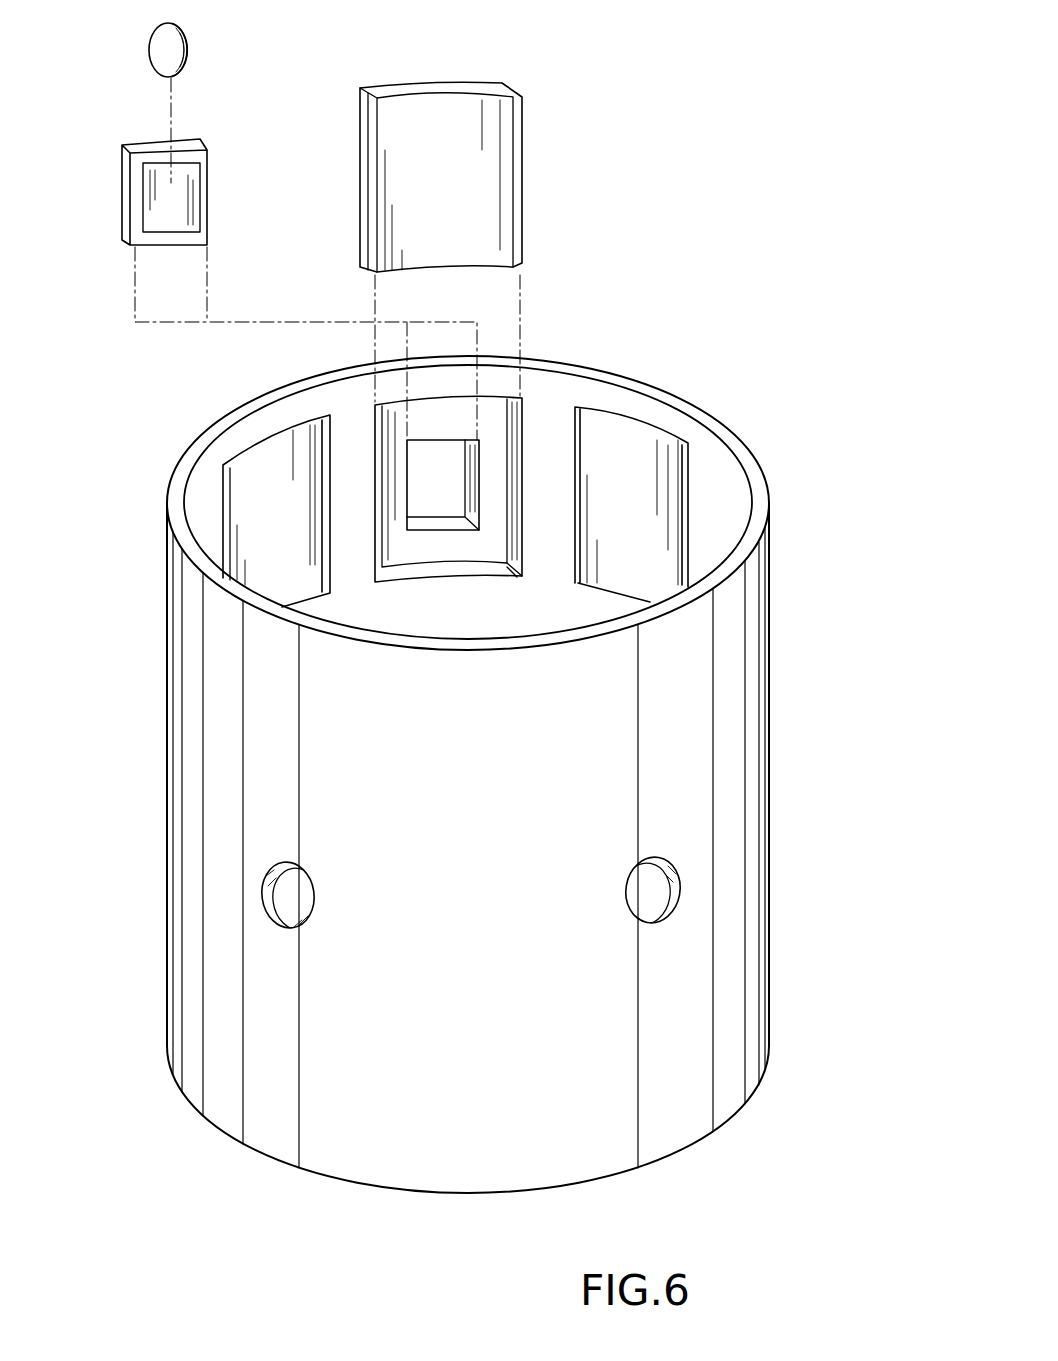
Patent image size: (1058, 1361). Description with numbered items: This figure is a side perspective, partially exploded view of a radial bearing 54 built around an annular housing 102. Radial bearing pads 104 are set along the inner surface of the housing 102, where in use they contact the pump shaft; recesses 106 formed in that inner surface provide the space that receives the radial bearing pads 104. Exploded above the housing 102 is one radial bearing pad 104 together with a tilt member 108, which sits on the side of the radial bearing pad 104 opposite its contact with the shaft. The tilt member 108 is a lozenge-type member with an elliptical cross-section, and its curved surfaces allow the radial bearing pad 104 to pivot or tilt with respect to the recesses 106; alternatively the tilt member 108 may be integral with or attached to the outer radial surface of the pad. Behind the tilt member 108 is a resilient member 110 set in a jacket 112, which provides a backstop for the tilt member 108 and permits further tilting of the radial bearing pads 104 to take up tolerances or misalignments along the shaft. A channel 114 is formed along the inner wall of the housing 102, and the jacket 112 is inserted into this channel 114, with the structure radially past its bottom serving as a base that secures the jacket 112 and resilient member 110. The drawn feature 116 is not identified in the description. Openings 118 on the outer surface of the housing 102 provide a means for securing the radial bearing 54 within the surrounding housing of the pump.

The radial bearing 54 is at (843, 469).
The annular housing 102 is at (740, 709).
The radial bearing pads 104 is at (559, 95).
The recesses 106 is at (498, 403).
The tilt member 108 is at (150, 40).
The resilient member 110 is at (182, 198).
The jacket 112 is at (136, 150).
The channel 114 is at (403, 463).
The opening 116 is at (440, 493).
The openings 118 is at (313, 893).